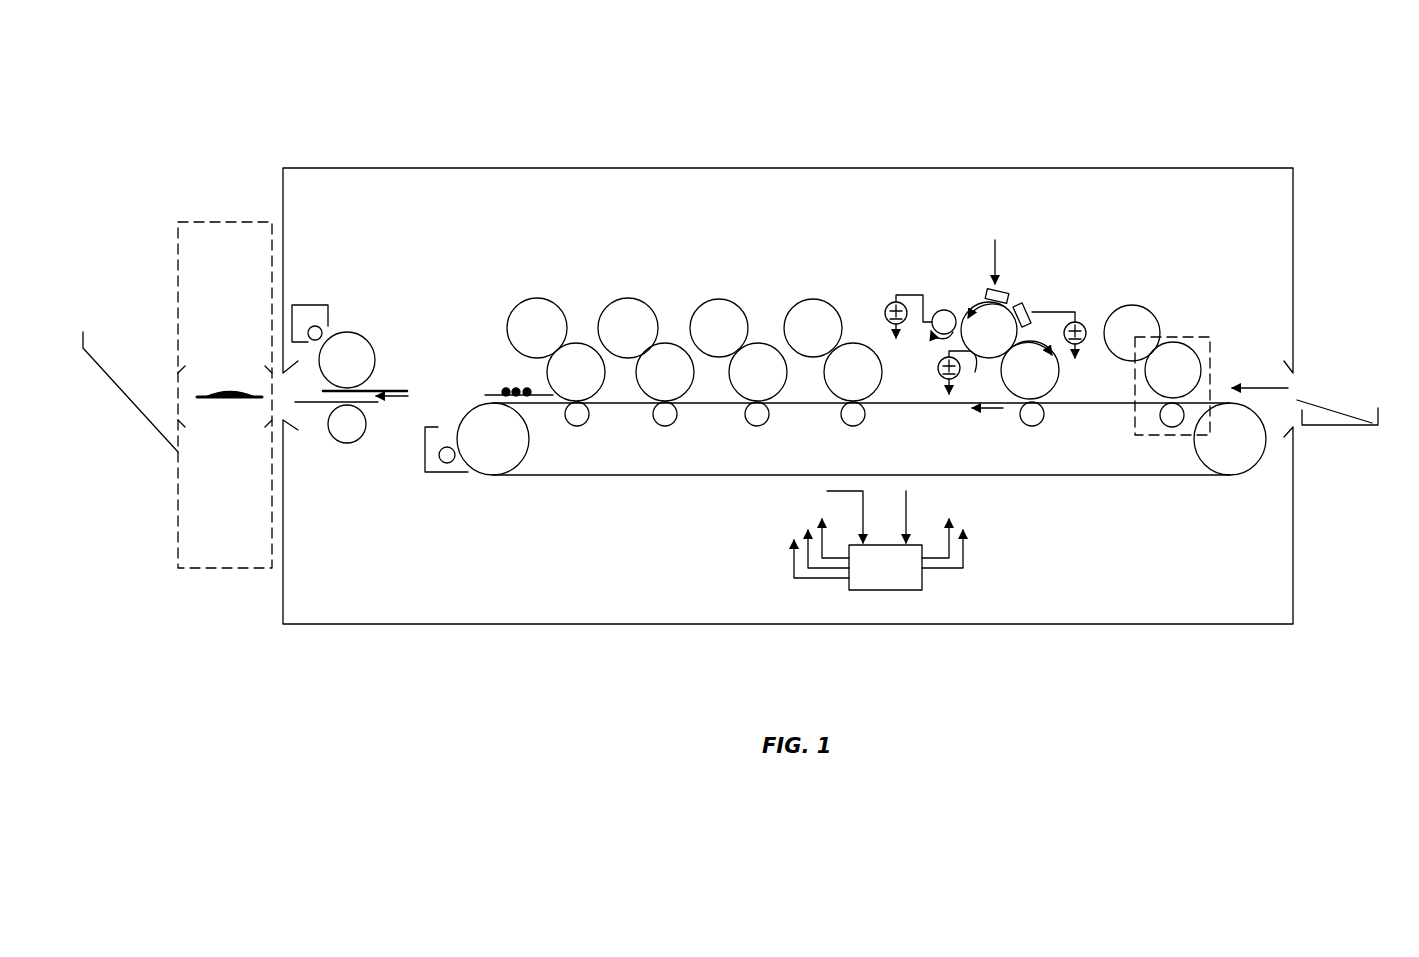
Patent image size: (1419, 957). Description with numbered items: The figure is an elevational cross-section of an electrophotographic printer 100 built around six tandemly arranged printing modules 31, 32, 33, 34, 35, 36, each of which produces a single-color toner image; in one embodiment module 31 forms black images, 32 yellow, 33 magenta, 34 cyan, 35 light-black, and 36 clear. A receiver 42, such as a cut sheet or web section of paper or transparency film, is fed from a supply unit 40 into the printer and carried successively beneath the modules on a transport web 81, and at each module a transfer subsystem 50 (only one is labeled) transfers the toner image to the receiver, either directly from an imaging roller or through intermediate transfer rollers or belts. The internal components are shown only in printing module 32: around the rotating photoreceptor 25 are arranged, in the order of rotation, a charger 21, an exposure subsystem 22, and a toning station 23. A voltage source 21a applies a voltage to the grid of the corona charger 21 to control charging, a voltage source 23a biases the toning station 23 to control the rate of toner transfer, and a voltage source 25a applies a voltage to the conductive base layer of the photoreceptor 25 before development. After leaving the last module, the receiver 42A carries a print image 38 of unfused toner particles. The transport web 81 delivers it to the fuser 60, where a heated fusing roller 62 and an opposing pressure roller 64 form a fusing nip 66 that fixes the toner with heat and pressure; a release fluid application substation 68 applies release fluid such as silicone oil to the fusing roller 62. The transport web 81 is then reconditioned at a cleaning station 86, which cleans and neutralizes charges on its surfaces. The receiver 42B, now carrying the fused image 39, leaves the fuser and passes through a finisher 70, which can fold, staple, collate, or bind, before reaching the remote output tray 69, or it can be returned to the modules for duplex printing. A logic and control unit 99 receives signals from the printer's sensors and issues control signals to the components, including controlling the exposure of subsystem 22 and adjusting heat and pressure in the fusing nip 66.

The electrophotographic printer 100 is at (1012, 110).
The charger 21 is at (1031, 311).
The voltage source 21a is at (1076, 363).
The exposure subsystem 22 is at (1001, 296).
The toning station 23 is at (947, 310).
The voltage source 23a is at (889, 301).
The photoreceptor 25 is at (975, 372).
The voltage source 25a is at (923, 404).
The printing module 31 is at (1130, 297).
The printing module 32 is at (995, 311).
The printing module 33 is at (812, 292).
The printing module 34 is at (718, 292).
The printing module 35 is at (627, 292).
The printing module 36 is at (537, 292).
The print image 38 is at (518, 388).
The fused image 39 is at (232, 393).
The supply unit 40 is at (1336, 442).
The receiver 42 is at (1358, 412).
The receiver 42A is at (522, 432).
The receiver 42B is at (255, 398).
The transfer subsystem 50 is at (1176, 438).
The fuser 60 is at (384, 366).
The fusing roller 62 is at (378, 356).
The pressure roller 64 is at (350, 443).
The fusing nip 66 is at (409, 397).
The release fluid application substation 68 is at (299, 300).
The output tray 69 is at (124, 394).
The finisher 70 is at (213, 572).
The transport web 81 is at (861, 464).
The cleaning station 86 is at (432, 474).
The logic and control unit 99 is at (900, 591).